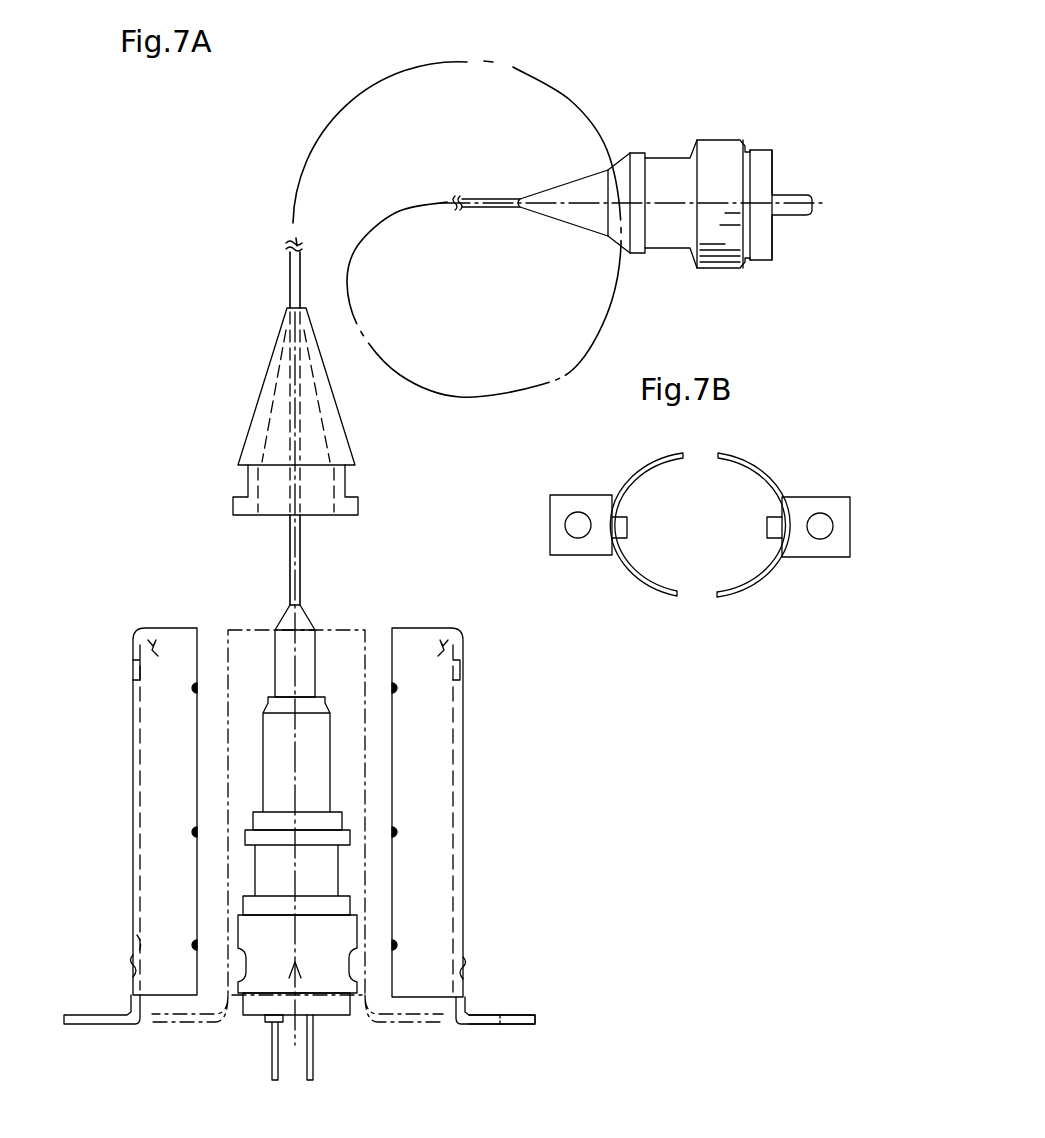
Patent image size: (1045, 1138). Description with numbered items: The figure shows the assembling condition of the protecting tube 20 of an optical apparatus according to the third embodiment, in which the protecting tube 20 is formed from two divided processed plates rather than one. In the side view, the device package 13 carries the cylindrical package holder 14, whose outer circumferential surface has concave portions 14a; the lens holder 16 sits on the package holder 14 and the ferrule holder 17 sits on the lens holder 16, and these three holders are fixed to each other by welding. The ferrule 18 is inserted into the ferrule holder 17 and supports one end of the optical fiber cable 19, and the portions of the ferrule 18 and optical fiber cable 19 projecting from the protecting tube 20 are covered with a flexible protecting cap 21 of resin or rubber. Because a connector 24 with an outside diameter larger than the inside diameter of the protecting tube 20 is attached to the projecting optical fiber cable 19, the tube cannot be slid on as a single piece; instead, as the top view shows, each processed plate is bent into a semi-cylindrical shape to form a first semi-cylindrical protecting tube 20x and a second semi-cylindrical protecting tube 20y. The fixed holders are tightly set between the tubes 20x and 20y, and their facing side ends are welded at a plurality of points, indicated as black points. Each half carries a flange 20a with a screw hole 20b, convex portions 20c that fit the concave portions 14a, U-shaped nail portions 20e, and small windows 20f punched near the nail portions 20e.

In FIG. 7A, the device package 13 is at (340, 1015).
In FIG. 7A, the package holder 14 is at (345, 950).
In FIG. 7A, the concave portions 14a is at (258, 1000).
In FIG. 7A, the lens holder 16 is at (325, 873).
In FIG. 7A, the ferrule holder 17 is at (272, 765).
In FIG. 7A, the ferrule 18 is at (305, 665).
In FIG. 7A, the optical fiber cable 19 is at (489, 200).
In FIG. 7A, the protecting tube 20 is at (232, 630).
In FIG. 7A, the flanges 20a is at (525, 1012).
In FIG. 7B, the flanges 20a is at (550, 510).
In FIG. 7A, the screw hole 20b is at (508, 1030).
In FIG. 7B, the screw hole 20b is at (578, 535).
In FIG. 7A, the convex portions 20c is at (140, 925).
In FIG. 7A, the nail portions 20e is at (152, 640).
In FIG. 7A, the small windows 20f is at (140, 663).
In FIG. 7A, the first semi-cylindrical protecting tube 20x is at (133, 720).
In FIG. 7B, the first semi-cylindrical protecting tube 20x is at (645, 592).
In FIG. 7A, the second semi-cylindrical protecting tube 20y is at (465, 760).
In FIG. 7B, the second semi-cylindrical protecting tube 20y is at (728, 600).
In FIG. 7A, the protecting cap 21 is at (262, 428).
In FIG. 7A, the connector 24 is at (725, 153).